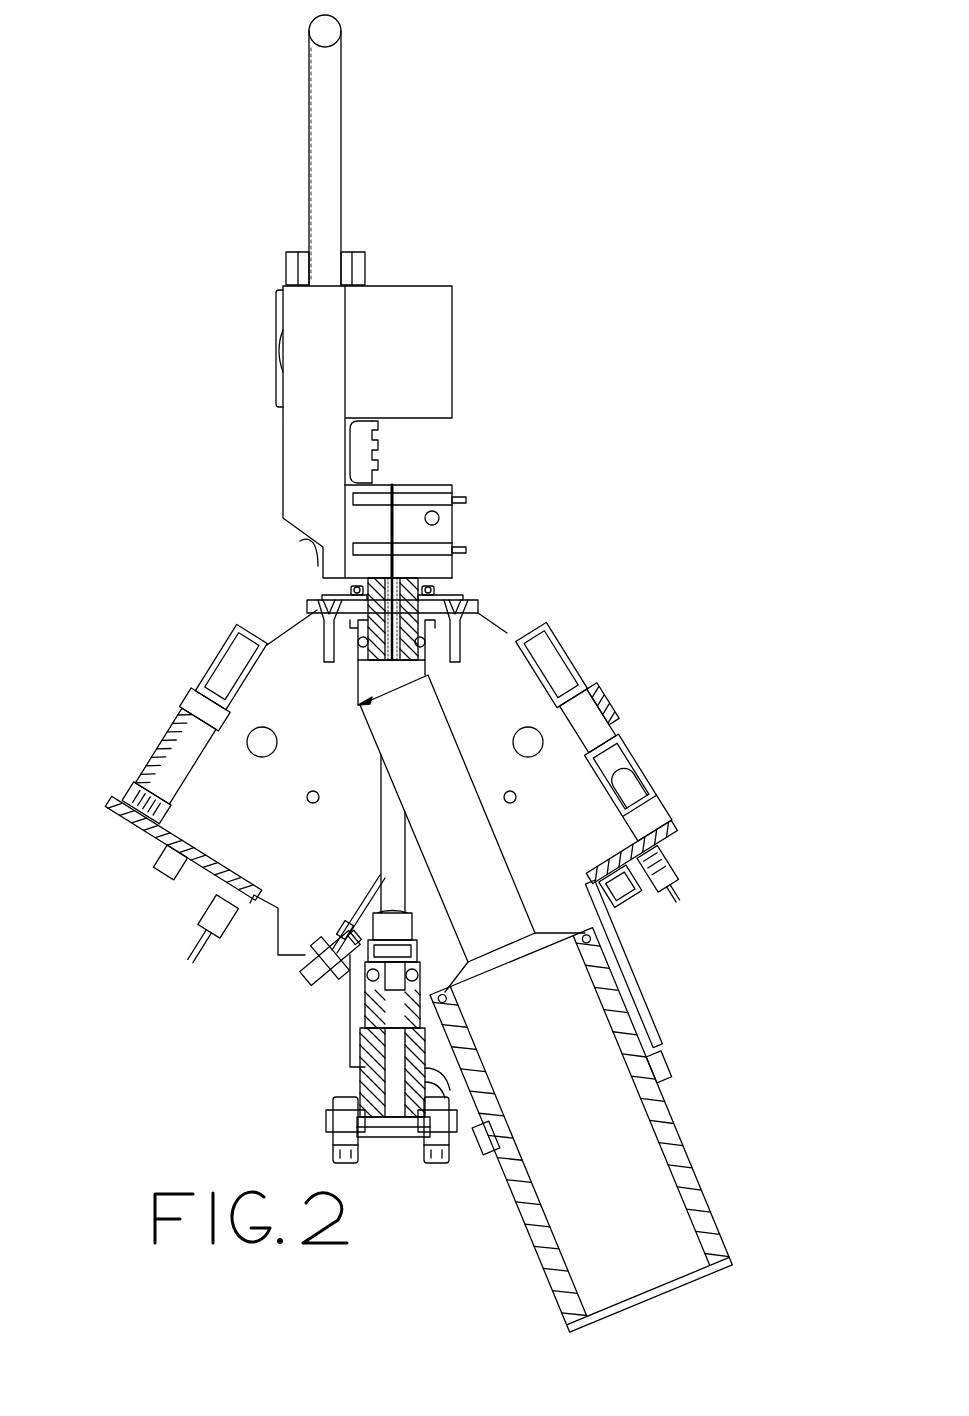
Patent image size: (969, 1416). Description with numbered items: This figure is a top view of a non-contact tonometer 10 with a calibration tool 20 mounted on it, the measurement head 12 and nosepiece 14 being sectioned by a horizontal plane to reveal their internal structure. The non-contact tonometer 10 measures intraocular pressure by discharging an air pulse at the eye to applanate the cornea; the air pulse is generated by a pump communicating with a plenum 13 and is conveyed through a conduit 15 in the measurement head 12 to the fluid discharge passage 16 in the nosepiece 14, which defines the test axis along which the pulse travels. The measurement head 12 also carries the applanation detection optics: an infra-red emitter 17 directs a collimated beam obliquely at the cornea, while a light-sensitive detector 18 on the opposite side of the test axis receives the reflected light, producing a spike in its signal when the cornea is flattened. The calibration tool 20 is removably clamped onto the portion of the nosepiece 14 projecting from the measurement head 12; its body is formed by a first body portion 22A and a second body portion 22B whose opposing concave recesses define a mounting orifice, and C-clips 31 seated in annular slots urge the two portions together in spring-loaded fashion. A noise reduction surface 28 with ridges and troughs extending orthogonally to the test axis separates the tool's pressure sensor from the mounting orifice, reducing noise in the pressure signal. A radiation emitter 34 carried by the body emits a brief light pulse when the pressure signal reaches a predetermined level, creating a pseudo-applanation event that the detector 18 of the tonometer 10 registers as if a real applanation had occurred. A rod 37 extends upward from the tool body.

The non-contact tonometer 10 is at (263, 977).
The measurement head 12 is at (300, 845).
The plenum 13 is at (578, 1115).
The nosepiece 14 is at (413, 662).
The conduit 15 is at (457, 822).
The fluid discharge passage 16 is at (387, 662).
The infra-red emitter 17 is at (625, 776).
The light-sensitive detector 18 is at (143, 780).
The tonometer calibration tool 20 is at (478, 342).
The first body portion 22A is at (420, 368).
The second body portion 22B is at (446, 528).
The noise reduction surface 28 is at (379, 447).
The C-clips 31 is at (467, 500).
The radiation emitter 34 is at (300, 543).
The rod 37 is at (344, 192).